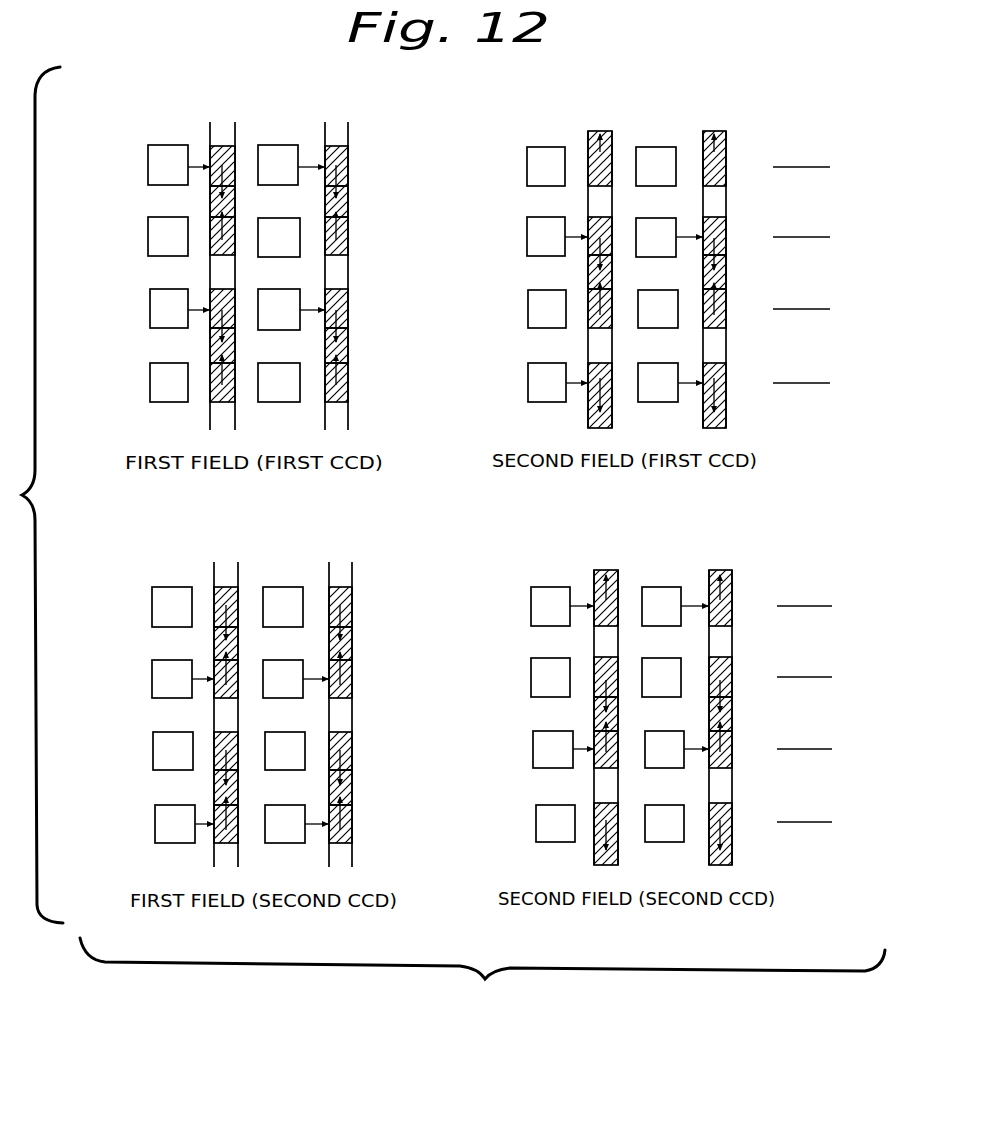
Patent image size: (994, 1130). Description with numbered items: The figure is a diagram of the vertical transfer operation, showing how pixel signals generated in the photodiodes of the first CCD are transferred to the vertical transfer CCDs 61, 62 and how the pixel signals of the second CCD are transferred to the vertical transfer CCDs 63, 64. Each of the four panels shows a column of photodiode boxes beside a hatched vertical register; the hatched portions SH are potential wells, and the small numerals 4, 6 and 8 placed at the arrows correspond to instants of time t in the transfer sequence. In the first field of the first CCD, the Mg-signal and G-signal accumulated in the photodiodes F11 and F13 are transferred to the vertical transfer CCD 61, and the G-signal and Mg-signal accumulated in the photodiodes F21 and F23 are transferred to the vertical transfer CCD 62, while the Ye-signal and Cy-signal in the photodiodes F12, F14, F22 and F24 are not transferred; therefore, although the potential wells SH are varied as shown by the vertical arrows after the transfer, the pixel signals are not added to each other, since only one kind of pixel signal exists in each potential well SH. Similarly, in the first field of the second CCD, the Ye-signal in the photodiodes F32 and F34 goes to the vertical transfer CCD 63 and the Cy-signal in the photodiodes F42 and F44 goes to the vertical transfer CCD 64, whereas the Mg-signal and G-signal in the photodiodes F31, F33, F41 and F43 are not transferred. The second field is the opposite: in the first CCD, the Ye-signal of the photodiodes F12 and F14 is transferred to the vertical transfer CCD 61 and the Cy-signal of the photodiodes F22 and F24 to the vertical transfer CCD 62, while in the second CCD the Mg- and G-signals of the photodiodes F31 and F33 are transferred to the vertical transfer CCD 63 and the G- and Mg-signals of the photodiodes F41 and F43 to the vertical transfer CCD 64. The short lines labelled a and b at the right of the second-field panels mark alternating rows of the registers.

The vertical transfer CCD 61 is at (219, 141).
The vertical transfer CCD 62 is at (337, 140).
The vertical transfer CCD 63 is at (222, 583).
The vertical transfer CCD 64 is at (333, 583).
The time t 4 is at (256, 226).
The time t 6 is at (260, 738).
The time t 8 is at (296, 497).
The potential well SH is at (348, 230).
The line a is at (816, 458).
The line b is at (816, 529).
The photodiode F11 is at (148, 163).
The photodiode F12 is at (148, 235).
The photodiode F13 is at (150, 308).
The photodiode F14 is at (150, 380).
The photodiode F21 is at (283, 145).
The photodiode F22 is at (268, 218).
The photodiode F23 is at (290, 289).
The photodiode F24 is at (265, 402).
The photodiode F31 is at (152, 605).
The photodiode F32 is at (152, 678).
The photodiode F33 is at (153, 750).
The photodiode F34 is at (155, 822).
The photodiode F41 is at (288, 587).
The photodiode F42 is at (268, 698).
The photodiode F43 is at (305, 752).
The photodiode F44 is at (290, 843).